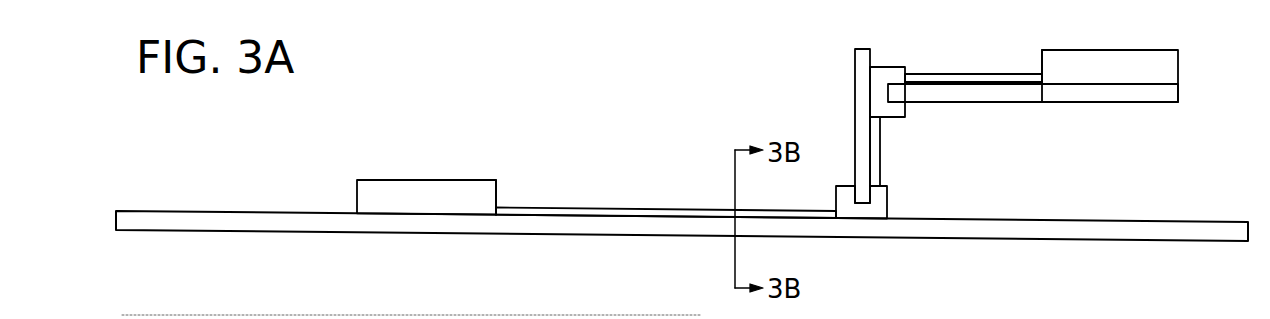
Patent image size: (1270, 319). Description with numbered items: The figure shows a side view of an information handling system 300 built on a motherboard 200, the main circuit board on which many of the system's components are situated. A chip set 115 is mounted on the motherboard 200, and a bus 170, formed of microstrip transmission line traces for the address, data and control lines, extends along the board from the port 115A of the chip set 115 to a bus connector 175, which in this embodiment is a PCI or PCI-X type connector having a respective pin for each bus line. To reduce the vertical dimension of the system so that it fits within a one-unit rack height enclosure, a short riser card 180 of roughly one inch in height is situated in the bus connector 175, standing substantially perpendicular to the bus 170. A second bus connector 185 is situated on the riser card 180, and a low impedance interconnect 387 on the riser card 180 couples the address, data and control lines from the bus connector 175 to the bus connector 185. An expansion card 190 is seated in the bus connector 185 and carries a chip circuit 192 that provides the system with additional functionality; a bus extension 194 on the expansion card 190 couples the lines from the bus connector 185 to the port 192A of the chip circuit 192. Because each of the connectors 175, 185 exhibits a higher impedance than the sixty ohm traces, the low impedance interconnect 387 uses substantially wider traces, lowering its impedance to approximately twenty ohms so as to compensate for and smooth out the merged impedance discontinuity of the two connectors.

The information handling system 300 is at (642, 80).
The motherboard 200 is at (157, 210).
The chip set 115 is at (380, 180).
The port 115A is at (497, 206).
The bus 170 is at (597, 207).
The bus connector 175 is at (887, 200).
The riser card 180 is at (855, 94).
The bus connector 185 is at (890, 66).
The low impedance interconnect 387 is at (880, 152).
The expansion card 190 is at (997, 102).
The bus extension 194 is at (947, 74).
The chip circuit 192 is at (1110, 50).
The port 192A is at (1042, 75).